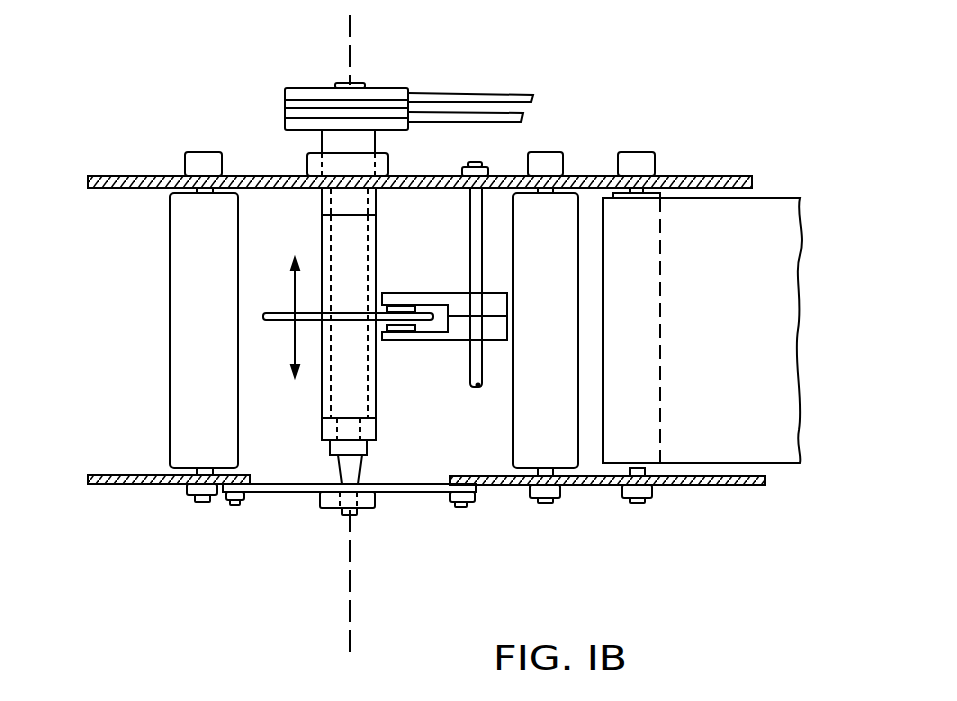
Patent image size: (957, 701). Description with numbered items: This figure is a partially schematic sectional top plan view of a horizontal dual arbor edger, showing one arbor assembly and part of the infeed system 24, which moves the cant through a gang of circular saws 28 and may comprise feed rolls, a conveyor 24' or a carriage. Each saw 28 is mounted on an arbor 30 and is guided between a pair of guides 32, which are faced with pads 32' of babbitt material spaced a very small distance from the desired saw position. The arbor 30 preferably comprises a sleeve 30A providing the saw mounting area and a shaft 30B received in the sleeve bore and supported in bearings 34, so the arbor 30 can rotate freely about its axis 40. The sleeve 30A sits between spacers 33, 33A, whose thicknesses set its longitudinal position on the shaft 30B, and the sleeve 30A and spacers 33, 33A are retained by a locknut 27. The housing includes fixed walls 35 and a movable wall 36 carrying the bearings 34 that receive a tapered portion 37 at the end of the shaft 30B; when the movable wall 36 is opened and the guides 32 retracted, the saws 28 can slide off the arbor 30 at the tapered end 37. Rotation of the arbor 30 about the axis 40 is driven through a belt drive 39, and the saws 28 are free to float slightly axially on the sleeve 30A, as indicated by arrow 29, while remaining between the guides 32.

The infeed system 24 is at (731, 302).
The conveyor 24' is at (742, 356).
The locknut 27 is at (330, 445).
The circular saw 28 is at (275, 305).
The arrow 29 is at (292, 342).
The arbor 30 is at (318, 398).
The sleeve 30A is at (376, 389).
The shaft 30B is at (362, 404).
The guide 32 is at (444, 287).
The pad 32' is at (419, 344).
The spacer 33 is at (377, 204).
The spacer 33A is at (377, 443).
The bearing 34 is at (306, 166).
The fixed wall 35 is at (152, 176).
The movable wall 36 is at (263, 495).
The tapered portion 37 is at (360, 512).
The belt drive 39 is at (480, 88).
The axis 40 is at (348, 602).